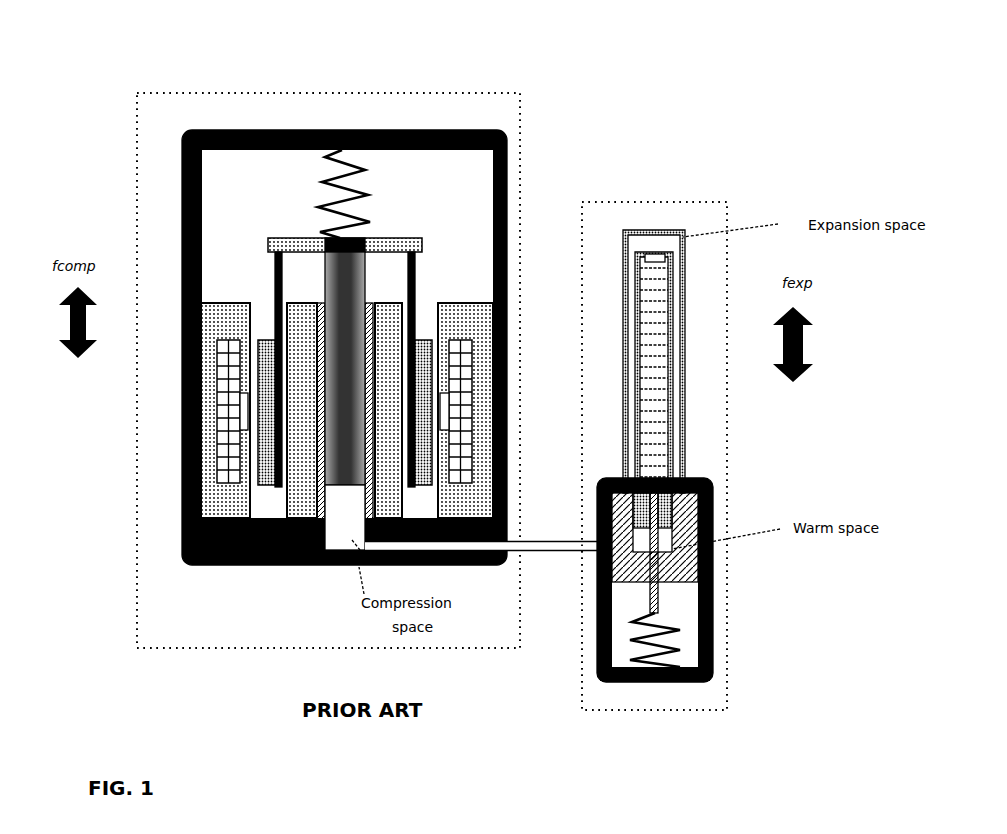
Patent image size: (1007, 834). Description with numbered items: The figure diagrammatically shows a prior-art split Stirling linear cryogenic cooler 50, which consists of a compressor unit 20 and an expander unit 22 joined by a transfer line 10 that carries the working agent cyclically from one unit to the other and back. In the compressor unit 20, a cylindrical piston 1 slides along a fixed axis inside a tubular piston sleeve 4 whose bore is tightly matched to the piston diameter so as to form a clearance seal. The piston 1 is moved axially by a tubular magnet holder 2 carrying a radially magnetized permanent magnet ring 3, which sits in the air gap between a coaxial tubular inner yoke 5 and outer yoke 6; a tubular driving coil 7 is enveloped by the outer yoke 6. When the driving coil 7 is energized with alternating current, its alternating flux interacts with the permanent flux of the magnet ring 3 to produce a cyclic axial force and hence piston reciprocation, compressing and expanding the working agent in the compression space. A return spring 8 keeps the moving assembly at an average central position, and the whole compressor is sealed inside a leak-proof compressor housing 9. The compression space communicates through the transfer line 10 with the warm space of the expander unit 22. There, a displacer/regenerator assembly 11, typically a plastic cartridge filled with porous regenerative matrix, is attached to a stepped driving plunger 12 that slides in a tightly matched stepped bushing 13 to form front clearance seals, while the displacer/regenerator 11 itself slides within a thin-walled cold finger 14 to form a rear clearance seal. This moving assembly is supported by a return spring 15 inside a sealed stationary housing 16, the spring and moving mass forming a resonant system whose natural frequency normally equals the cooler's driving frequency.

The split Stirling linear cryogenic cooler 50 is at (105, 100).
The compressor unit 20 is at (328, 348).
The expander unit 22 is at (660, 433).
The cylindrical piston 1 is at (353, 283).
The tubular magnet holder 2 is at (420, 267).
The permanent magnet ring 3 is at (266, 338).
The tubular piston sleeve 4 is at (328, 507).
The inner yoke 5 is at (298, 303).
The outer yoke 6 is at (478, 303).
The tubular driving coil 7 is at (182, 378).
The return spring 8 is at (373, 203).
The compressor housing 9 is at (507, 450).
The transfer line 10 is at (545, 537).
The displacer/regenerator assembly 11 is at (675, 290).
The stepped driving plunger 12 is at (713, 483).
The stepped bushing 13 is at (713, 513).
The cold finger 14 is at (687, 440).
The return spring 15 is at (675, 633).
The stationary housing 16 is at (713, 665).